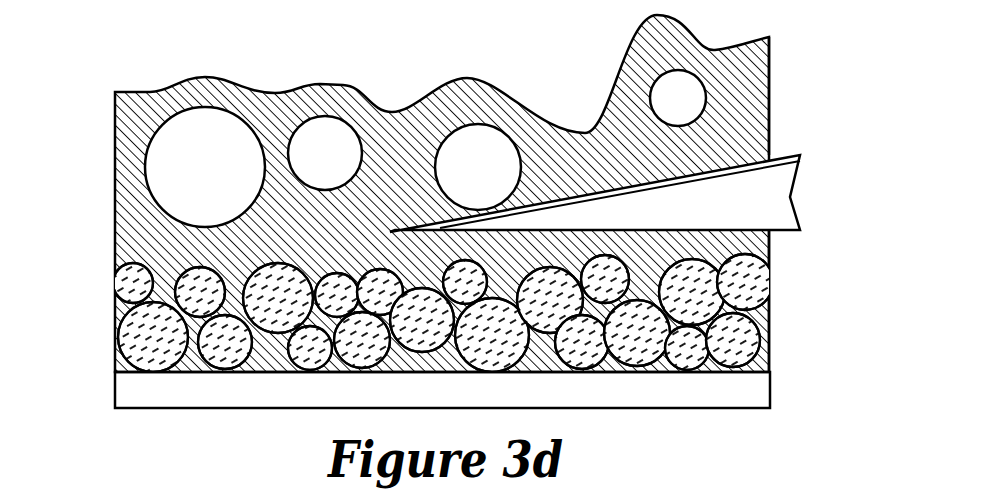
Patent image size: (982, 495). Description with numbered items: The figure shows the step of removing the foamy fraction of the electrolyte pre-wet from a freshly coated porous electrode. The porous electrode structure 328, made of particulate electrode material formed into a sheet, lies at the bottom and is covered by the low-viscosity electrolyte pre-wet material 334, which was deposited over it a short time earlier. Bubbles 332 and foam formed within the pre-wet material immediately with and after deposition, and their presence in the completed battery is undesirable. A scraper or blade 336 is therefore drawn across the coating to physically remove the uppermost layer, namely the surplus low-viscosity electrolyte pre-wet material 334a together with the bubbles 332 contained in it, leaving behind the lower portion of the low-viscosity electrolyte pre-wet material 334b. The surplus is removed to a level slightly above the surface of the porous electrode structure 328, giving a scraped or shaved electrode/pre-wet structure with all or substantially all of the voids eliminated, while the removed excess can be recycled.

The porous electrode structure 328 is at (90, 260).
The bubbles 332 is at (670, 90).
The low-viscosity electrolyte pre-wet material 334 is at (131, 127).
The surplus low-viscosity electrolyte pre-wet material 334a is at (737, 83).
The lower portion of the low-viscosity electrolyte pre-wet material 334b is at (770, 250).
The blade 336 is at (595, 193).